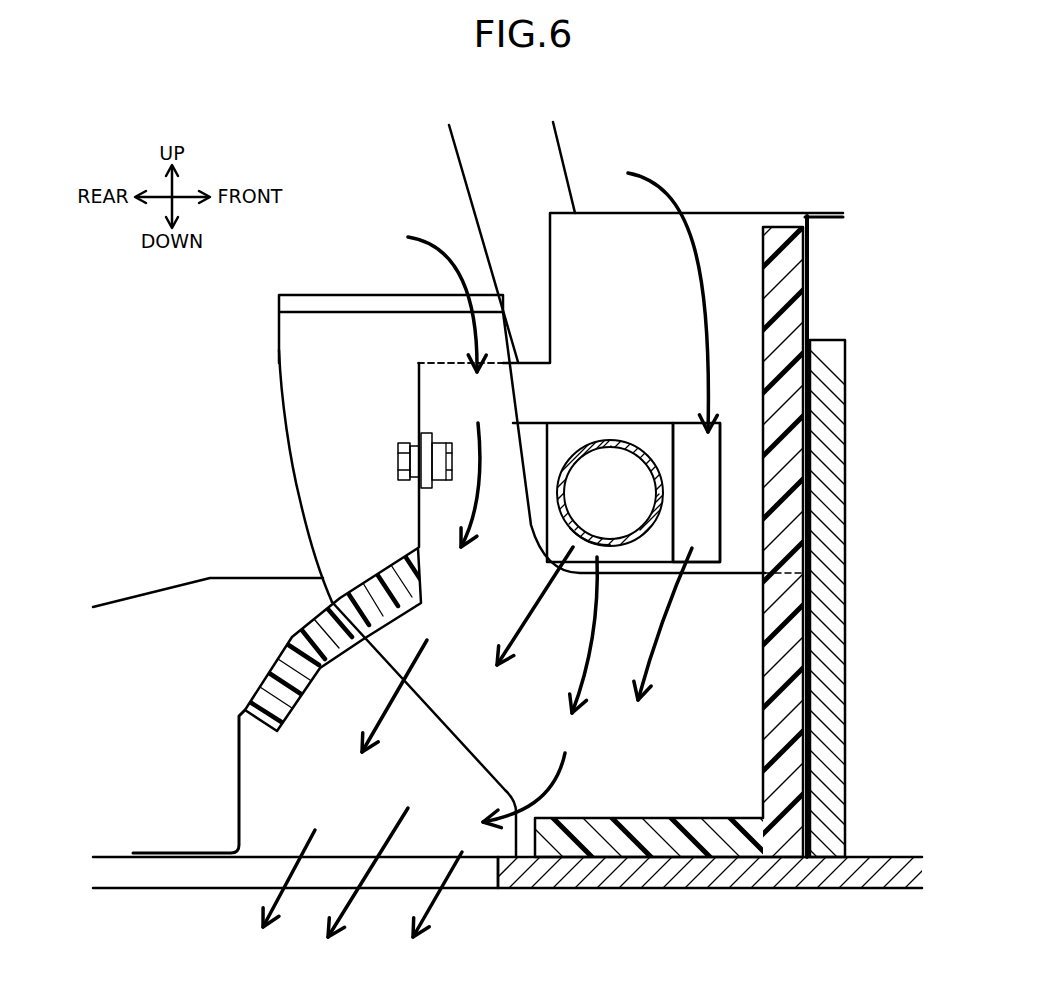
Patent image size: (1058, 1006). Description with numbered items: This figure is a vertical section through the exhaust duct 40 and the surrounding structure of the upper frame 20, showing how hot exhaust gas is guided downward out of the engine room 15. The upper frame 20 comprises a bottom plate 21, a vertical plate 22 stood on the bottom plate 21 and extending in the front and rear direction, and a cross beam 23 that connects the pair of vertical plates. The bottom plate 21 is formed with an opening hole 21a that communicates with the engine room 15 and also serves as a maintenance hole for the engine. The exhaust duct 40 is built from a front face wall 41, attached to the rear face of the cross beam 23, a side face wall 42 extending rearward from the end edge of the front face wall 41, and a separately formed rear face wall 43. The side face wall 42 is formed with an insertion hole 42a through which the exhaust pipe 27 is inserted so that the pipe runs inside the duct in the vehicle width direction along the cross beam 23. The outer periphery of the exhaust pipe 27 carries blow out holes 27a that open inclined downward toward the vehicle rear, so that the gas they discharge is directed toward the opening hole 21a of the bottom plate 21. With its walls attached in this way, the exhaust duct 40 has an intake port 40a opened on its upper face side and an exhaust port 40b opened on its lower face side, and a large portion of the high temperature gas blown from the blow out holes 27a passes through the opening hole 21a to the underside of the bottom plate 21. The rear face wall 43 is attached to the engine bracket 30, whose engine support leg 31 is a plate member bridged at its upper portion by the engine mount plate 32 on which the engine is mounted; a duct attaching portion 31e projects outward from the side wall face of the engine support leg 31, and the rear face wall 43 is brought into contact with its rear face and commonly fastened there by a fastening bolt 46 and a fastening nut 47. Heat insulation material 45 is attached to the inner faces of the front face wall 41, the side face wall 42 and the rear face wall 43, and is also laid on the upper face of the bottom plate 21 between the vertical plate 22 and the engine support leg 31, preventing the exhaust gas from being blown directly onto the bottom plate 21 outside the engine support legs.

The engine room 15 is at (182, 458).
The upper frame 20 is at (893, 212).
The bottom plate 21 is at (660, 890).
The opening hole 21a is at (483, 868).
The vertical plate 22 is at (225, 578).
The cross beam 23 is at (848, 517).
The exhaust pipe 27 is at (610, 437).
The blow out hole 27a is at (575, 532).
The engine bracket 30 is at (277, 358).
The engine support leg 31 is at (297, 447).
The duct attaching portion 31e is at (427, 435).
The engine mount plate 32 is at (345, 293).
The exhaust duct 40 is at (293, 633).
The intake port 40a is at (455, 387).
The exhaust port 40b is at (273, 838).
The front face wall 41 is at (810, 248).
The side face wall 42 is at (731, 213).
The insertion hole 42a is at (703, 438).
The rear face wall 43 is at (236, 765).
The heat insulation material 45 is at (790, 290).
The fastening bolt 46 is at (398, 461).
The fastening nut 47 is at (440, 480).